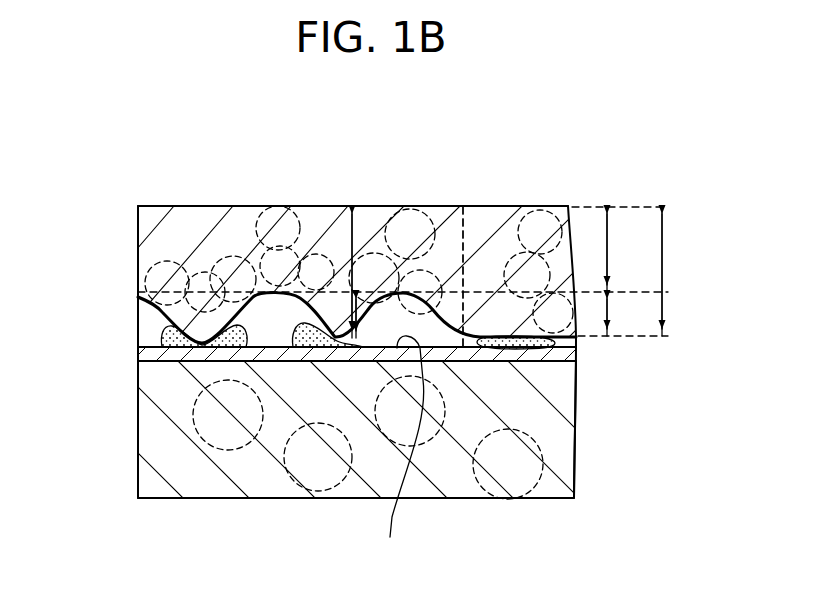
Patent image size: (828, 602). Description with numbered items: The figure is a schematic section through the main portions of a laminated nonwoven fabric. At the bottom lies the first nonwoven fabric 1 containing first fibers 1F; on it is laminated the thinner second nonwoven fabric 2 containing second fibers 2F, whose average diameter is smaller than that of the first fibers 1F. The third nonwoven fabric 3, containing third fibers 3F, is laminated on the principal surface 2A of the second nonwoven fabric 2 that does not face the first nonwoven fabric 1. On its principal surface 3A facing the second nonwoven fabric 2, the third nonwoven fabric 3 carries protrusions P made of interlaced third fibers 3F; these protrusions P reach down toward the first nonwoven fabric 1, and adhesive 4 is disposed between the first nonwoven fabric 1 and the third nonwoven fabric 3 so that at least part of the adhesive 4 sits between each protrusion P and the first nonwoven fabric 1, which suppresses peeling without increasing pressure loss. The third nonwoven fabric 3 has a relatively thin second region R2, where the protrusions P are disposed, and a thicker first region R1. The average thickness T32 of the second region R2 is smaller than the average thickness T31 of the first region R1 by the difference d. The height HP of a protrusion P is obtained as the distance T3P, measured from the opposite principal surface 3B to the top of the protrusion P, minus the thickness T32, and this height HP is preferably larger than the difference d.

The first nonwoven fabric 1 is at (165, 456).
The first fibers 1F is at (250, 362).
The second nonwoven fabric 2 is at (138, 363).
The second fibers 2F is at (312, 348).
The principal surface 2A is at (401, 452).
The third nonwoven fabric 3 is at (535, 146).
The principal surface 3A is at (445, 324).
The principal surface 3B is at (186, 204).
The third fibers 3F is at (578, 352).
The adhesive 4 is at (145, 341).
The protrusions P is at (330, 320).
The first region R1 is at (567, 201).
The second region R2 is at (140, 201).
The distance T3P is at (348, 252).
The average thickness of first region T31 is at (664, 280).
The average thickness of second region T32 is at (607, 250).
The difference d is at (607, 320).
The height of protrusion HP is at (352, 207).